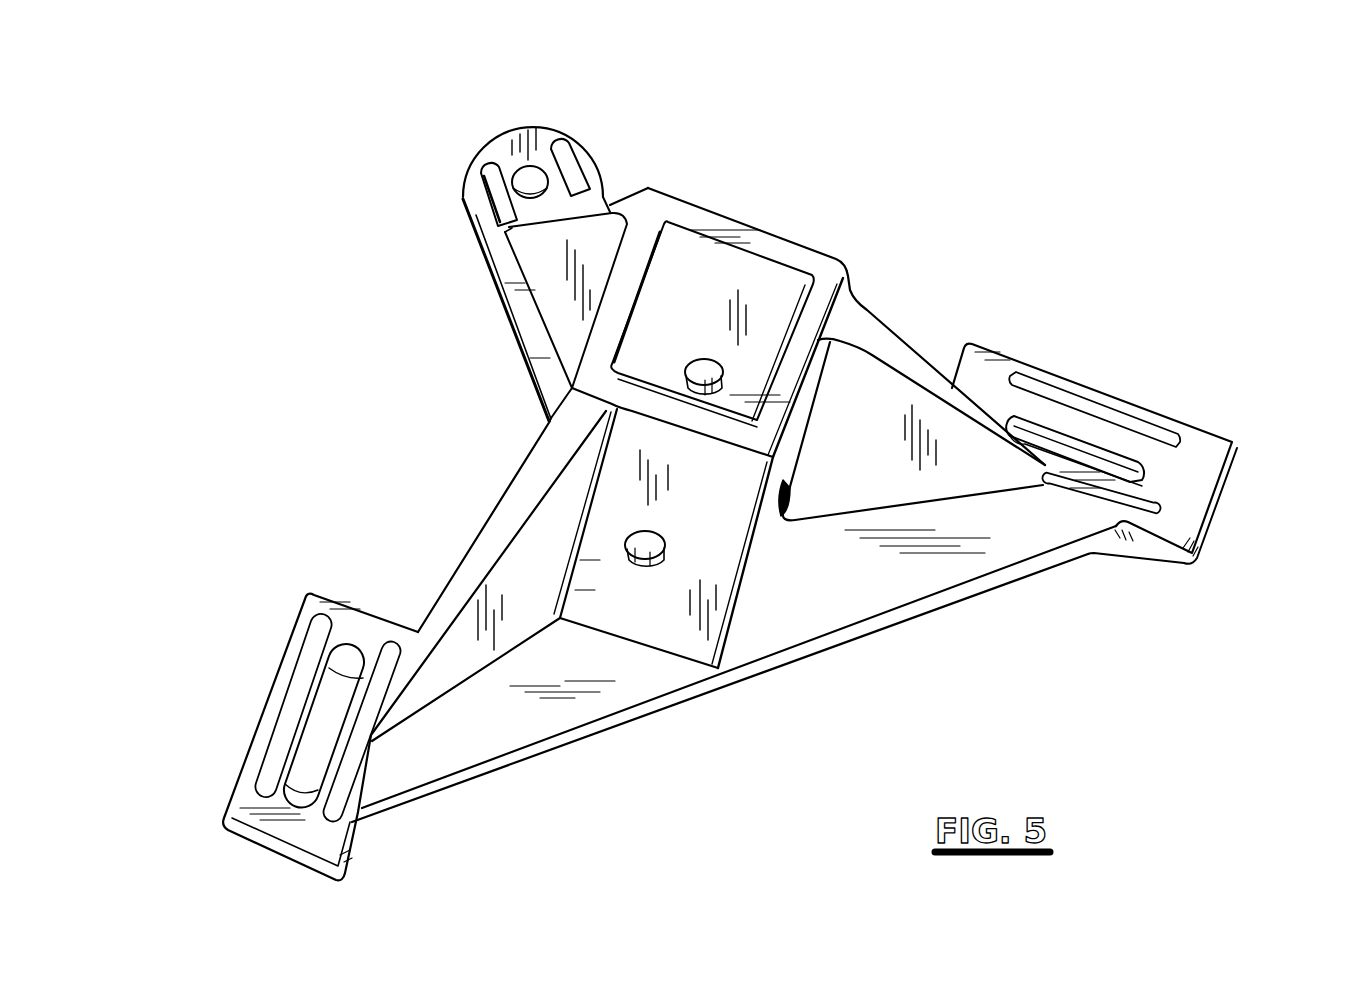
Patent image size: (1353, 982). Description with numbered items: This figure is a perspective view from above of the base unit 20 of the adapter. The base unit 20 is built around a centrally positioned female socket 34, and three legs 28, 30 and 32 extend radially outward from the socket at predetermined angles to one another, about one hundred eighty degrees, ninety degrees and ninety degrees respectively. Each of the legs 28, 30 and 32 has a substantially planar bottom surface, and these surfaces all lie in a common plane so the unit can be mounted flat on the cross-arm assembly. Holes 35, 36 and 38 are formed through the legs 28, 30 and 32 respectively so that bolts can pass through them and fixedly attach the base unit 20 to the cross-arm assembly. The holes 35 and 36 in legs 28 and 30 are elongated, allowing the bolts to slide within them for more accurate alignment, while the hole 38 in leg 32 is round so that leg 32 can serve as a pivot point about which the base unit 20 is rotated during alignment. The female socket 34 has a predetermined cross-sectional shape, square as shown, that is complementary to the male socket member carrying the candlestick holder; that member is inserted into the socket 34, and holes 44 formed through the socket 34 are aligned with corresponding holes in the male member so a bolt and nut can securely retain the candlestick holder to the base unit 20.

The base unit 20 is at (930, 261).
The leg 28 is at (1187, 513).
The leg 30 is at (343, 837).
The leg 32 is at (485, 150).
The female socket 34 is at (713, 553).
The hole 35 is at (1127, 471).
The hole 36 is at (316, 781).
The hole 38 is at (528, 188).
The hole 44 is at (706, 362).